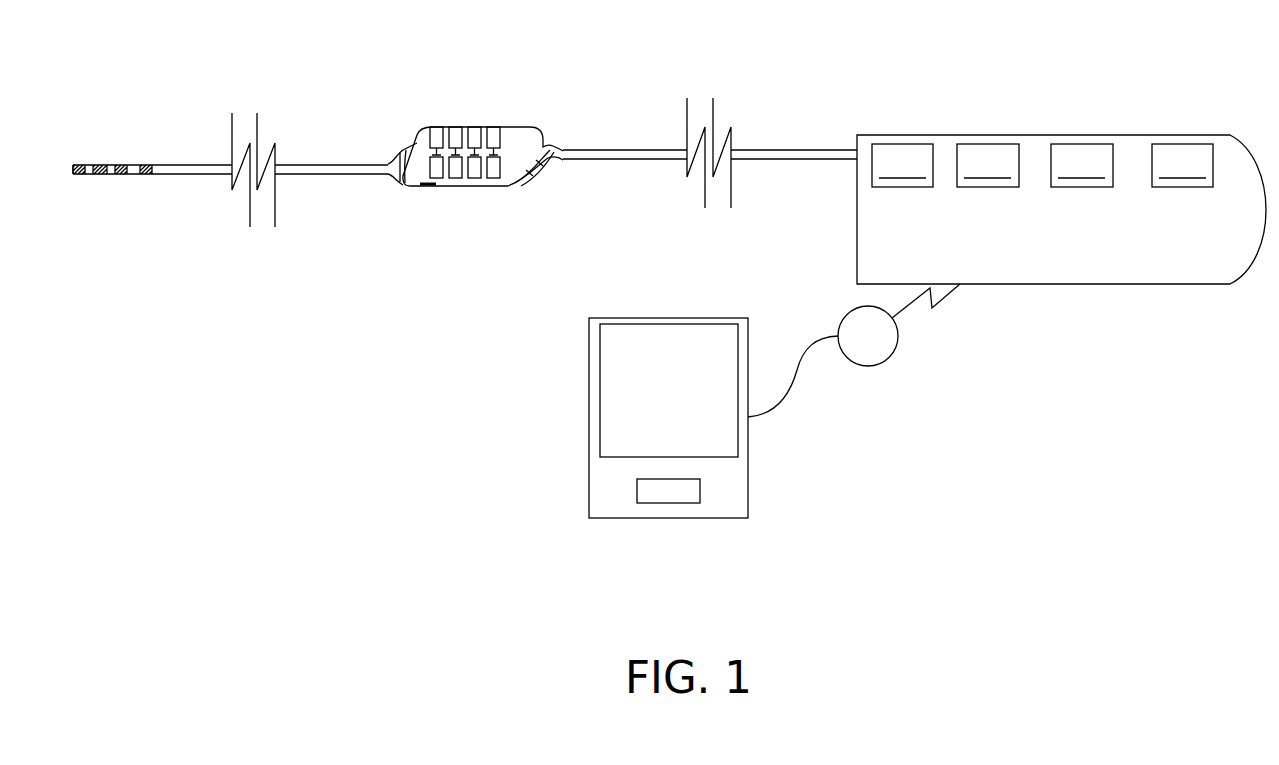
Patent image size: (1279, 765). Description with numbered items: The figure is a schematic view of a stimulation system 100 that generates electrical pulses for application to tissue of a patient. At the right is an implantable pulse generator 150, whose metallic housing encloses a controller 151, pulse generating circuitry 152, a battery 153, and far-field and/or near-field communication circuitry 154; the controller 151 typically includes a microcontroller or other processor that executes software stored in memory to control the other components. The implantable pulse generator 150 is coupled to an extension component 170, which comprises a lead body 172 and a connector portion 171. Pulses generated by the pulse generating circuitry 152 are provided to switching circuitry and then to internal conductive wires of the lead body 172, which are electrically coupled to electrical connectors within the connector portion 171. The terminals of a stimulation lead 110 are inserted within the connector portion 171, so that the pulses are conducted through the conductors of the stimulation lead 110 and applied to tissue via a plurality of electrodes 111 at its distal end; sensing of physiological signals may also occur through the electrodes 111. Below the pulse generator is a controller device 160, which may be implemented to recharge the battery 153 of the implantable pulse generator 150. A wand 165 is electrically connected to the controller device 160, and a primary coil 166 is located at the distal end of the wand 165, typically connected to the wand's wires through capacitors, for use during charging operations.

The stimulation system 100 is at (391, 403).
The stimulation lead 110 is at (230, 174).
The electrodes 111 is at (122, 175).
The implantable pulse generator 150 is at (1061, 236).
The controller 151 is at (902, 165).
The pulse generating circuitry 152 is at (988, 165).
The battery 153 is at (1082, 165).
The communication circuitry 154 is at (1182, 165).
The controller device 160 is at (703, 318).
The wand 165 is at (808, 352).
The coil 166 is at (868, 366).
The extension component 170 is at (490, 115).
The connector portion 171 is at (477, 126).
The lead body 172 is at (608, 161).